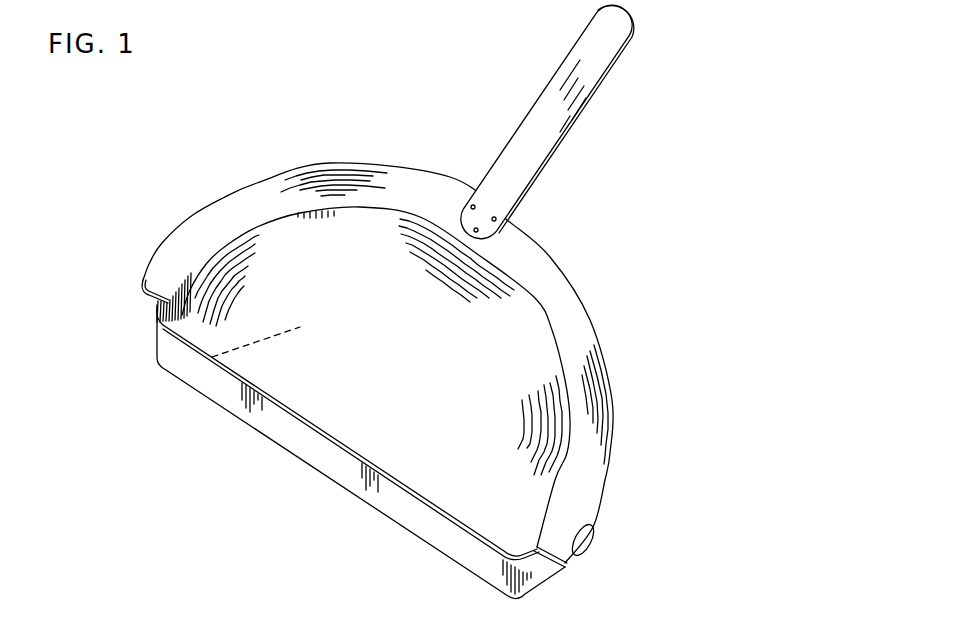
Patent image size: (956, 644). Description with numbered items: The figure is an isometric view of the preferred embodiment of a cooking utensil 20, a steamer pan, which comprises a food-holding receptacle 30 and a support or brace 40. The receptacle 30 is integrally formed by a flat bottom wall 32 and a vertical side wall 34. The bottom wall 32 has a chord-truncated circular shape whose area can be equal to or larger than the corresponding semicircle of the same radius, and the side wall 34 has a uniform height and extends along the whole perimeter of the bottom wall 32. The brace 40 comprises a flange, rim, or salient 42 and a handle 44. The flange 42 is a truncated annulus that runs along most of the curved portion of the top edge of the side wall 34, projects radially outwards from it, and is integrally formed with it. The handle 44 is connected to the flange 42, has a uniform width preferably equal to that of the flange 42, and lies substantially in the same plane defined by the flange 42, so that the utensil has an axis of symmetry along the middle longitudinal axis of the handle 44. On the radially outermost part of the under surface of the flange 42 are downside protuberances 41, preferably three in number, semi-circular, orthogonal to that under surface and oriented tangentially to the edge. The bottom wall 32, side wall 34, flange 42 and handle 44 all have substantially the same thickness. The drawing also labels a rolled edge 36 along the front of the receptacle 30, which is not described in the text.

The cooking utensil 20 is at (637, 263).
The food-holding receptacle 30 is at (417, 437).
The bottom wall 32 is at (212, 357).
The side wall 34 is at (221, 266).
The rolled edge 36 is at (552, 328).
The brace 40 is at (469, 178).
The downside protuberances 41 is at (592, 536).
The flange 42 is at (260, 197).
The handle 44 is at (603, 63).